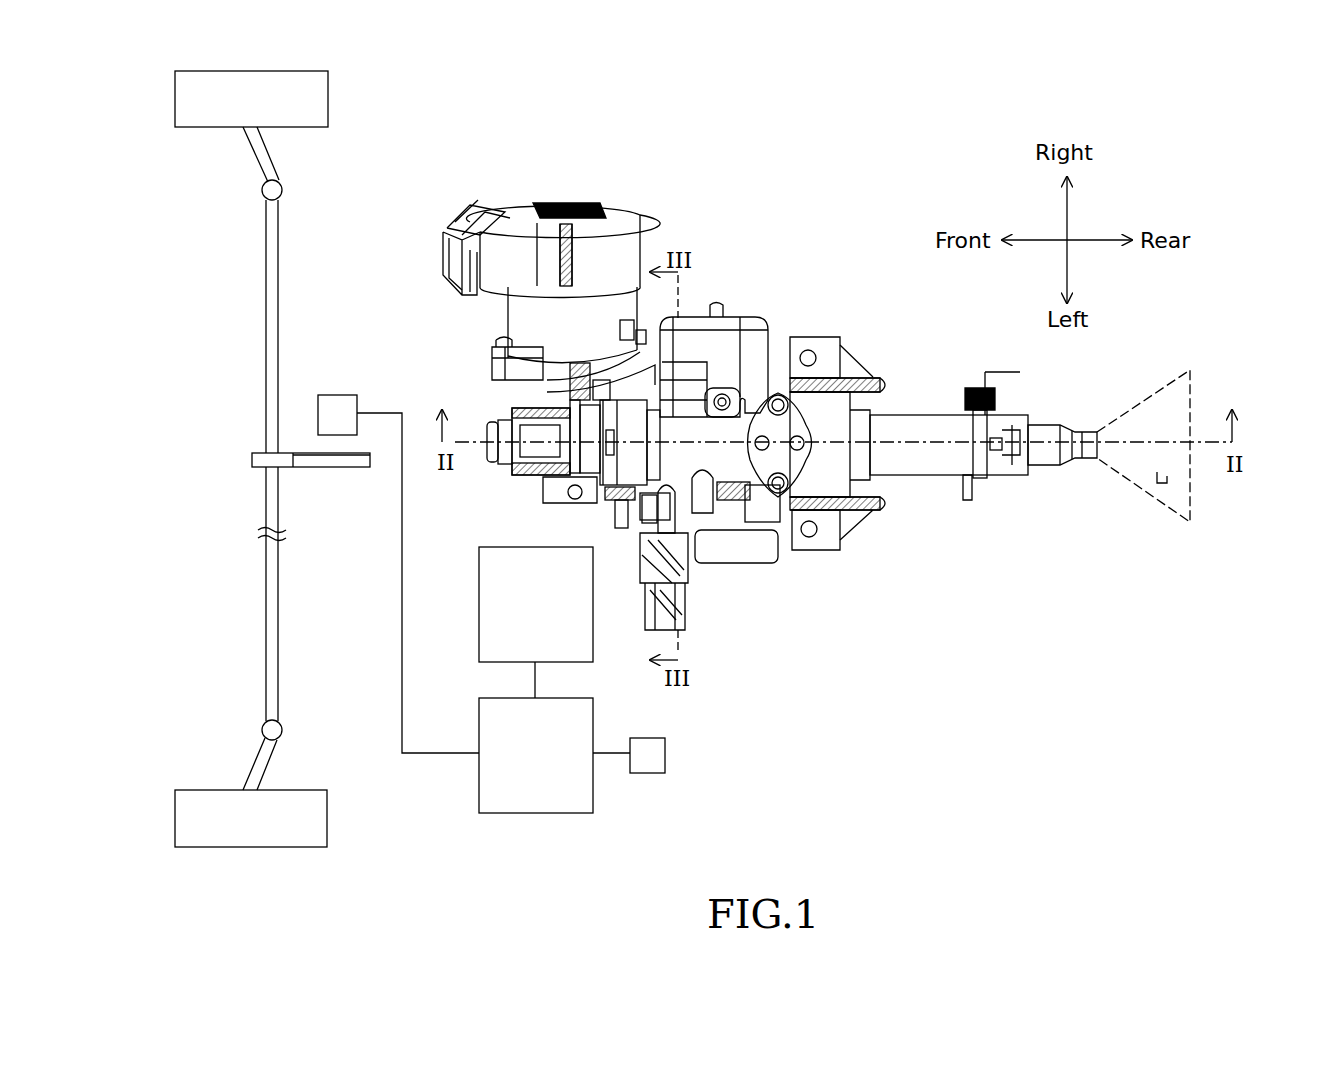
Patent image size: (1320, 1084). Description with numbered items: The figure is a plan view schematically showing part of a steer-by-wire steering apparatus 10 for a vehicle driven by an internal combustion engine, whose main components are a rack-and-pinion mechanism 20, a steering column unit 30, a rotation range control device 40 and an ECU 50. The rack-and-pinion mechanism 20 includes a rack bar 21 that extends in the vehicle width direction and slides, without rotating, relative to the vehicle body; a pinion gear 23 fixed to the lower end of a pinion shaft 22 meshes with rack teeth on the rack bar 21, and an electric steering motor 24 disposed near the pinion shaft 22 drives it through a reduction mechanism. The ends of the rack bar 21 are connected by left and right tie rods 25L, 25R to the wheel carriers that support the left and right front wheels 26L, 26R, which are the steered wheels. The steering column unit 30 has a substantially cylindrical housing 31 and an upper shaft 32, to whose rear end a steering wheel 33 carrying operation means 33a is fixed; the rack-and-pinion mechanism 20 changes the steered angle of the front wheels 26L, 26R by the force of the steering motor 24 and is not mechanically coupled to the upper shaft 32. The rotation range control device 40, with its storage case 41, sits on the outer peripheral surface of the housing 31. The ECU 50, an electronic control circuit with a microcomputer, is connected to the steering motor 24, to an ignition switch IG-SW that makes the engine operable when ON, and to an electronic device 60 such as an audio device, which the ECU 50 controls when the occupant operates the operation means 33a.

The steer-by-wire steering apparatus 10 is at (840, 627).
The rack-and-pinion mechanism 20 is at (235, 599).
The rack bar 21 is at (265, 310).
The pinion shaft 22 is at (337, 470).
The pinion gear 23 is at (252, 460).
The electric steering motor 24 is at (337, 395).
The right tie rod 25R is at (265, 151).
The left tie rod 25L is at (265, 765).
The right front wheel 26R is at (320, 98).
The left front wheel 26L is at (313, 819).
The steering column unit 30 is at (919, 376).
The housing 31 is at (928, 477).
The upper shaft 32 is at (1045, 466).
The steering wheel 33 is at (1157, 385).
The operation means 33a is at (1161, 485).
The rotation range control device 40 is at (750, 310).
The storage case 41 is at (730, 317).
The ECU 50 is at (584, 800).
The electronic device 60 is at (480, 605).
The ignition switch IG-SW is at (665, 762).